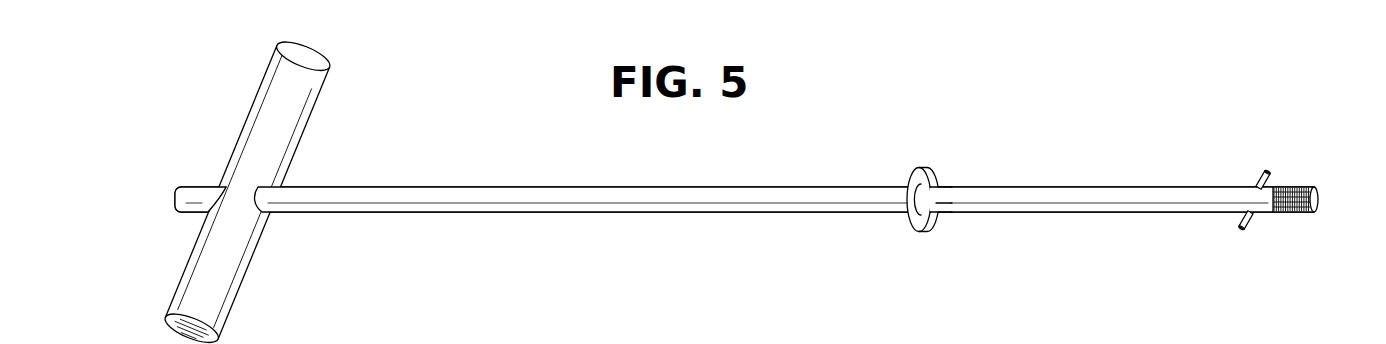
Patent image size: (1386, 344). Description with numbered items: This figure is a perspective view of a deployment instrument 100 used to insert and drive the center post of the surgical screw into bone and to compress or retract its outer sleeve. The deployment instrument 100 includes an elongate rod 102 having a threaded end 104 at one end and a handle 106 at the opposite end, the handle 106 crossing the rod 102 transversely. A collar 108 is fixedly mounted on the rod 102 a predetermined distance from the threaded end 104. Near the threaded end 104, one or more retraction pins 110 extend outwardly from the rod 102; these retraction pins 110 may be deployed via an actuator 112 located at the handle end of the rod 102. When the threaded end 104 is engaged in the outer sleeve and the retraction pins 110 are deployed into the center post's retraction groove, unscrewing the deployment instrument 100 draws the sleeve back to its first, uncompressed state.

The deployment instrument 100 is at (380, 148).
The rod 102 is at (1123, 187).
The threaded end 104 is at (1295, 186).
The handle 106 is at (242, 132).
The collar 108 is at (920, 167).
The retraction pins 110 is at (1258, 176).
The actuator 112 is at (192, 186).